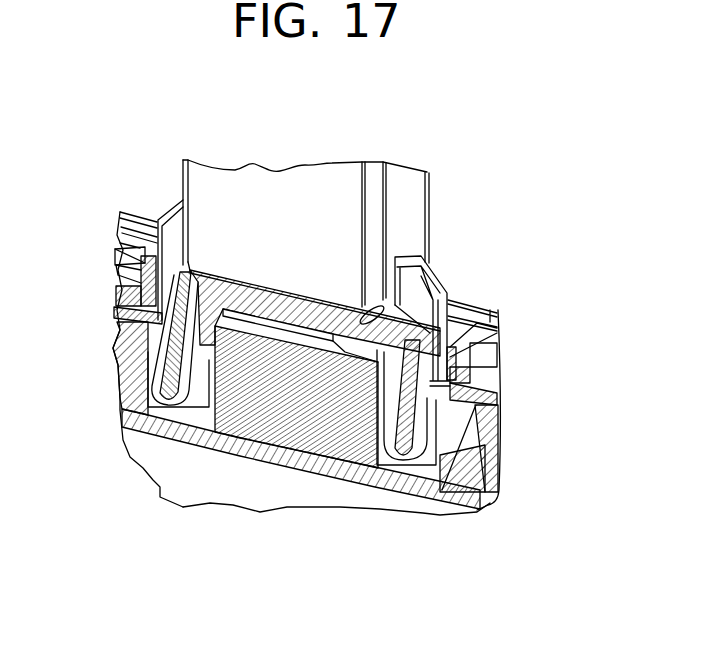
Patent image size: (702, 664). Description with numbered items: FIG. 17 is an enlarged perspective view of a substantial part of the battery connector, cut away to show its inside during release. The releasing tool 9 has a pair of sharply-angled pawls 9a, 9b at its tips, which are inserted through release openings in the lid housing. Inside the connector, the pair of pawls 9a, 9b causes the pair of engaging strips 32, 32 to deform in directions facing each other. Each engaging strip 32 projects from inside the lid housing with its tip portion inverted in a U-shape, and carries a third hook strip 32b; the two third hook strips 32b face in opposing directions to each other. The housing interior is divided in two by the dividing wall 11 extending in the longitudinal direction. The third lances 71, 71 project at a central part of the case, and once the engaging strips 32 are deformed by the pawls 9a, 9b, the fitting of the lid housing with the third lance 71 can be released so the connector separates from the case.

The releasing tool 9 is at (444, 165).
The pawl 9a is at (168, 222).
The pawl 9b is at (432, 275).
The dividing wall 11 is at (270, 432).
The engaging strip 32 is at (163, 433).
The third hook strip 32b is at (120, 413).
The third lance 71 is at (160, 368).